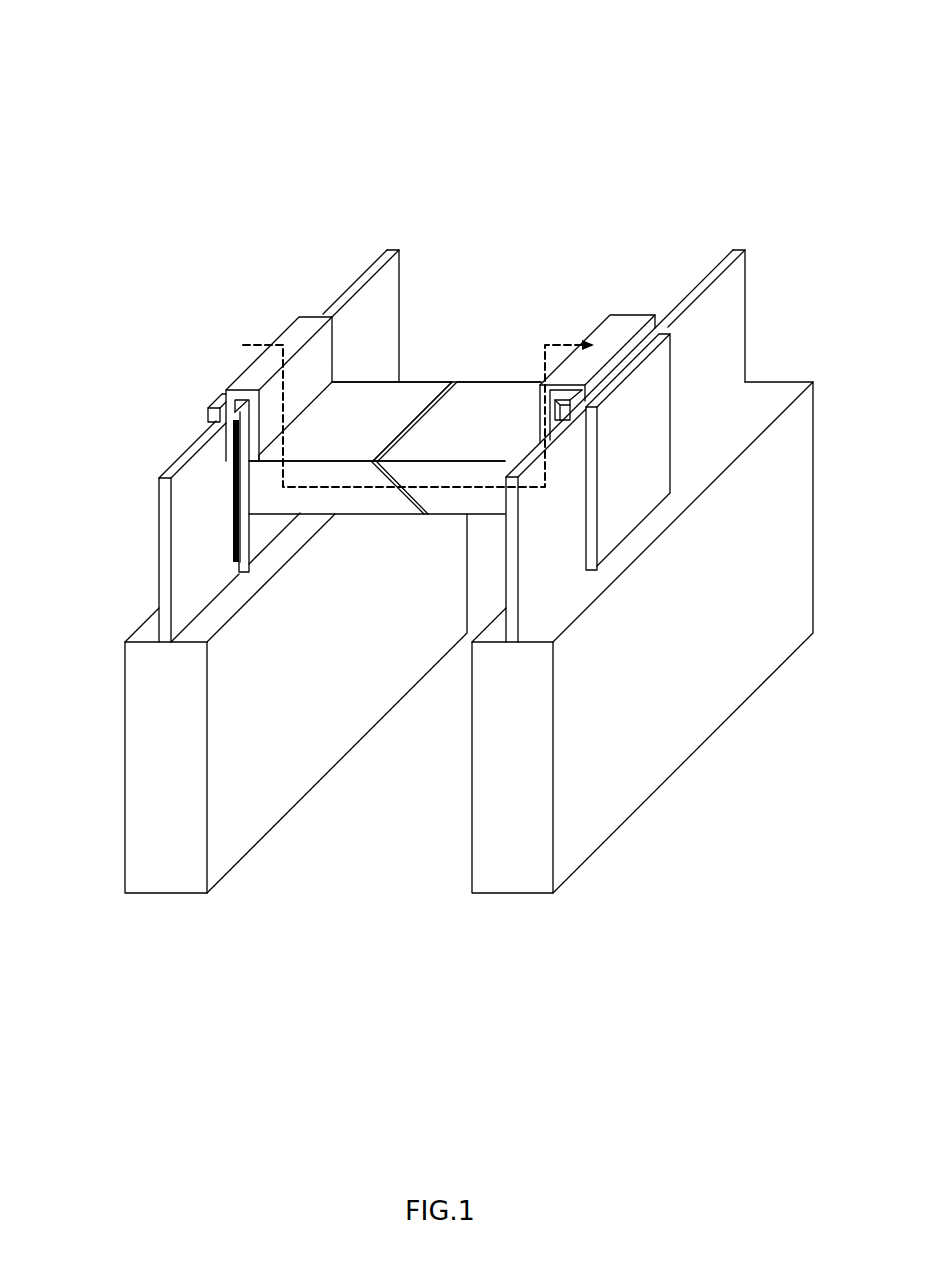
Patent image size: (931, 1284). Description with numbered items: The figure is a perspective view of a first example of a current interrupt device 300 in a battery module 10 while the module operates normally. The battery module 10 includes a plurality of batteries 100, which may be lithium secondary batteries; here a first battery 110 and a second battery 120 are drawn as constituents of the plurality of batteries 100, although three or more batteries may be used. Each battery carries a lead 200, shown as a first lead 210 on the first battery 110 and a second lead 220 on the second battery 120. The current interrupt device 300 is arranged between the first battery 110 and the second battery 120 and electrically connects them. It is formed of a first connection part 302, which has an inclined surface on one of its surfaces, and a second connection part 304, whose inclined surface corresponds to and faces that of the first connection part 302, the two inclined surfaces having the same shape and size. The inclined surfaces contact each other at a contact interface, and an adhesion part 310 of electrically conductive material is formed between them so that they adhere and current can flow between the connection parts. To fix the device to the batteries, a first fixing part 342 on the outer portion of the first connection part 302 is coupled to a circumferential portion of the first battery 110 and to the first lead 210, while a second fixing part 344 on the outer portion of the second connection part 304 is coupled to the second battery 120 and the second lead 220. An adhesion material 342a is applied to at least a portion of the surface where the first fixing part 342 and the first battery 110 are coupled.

The battery module 10 is at (576, 84).
The plurality of batteries 100 is at (165, 962).
The first battery 110 is at (165, 893).
The second battery 120 is at (511, 893).
The lead 200 is at (738, 178).
The first lead 210 is at (389, 249).
The second lead 220 is at (737, 249).
The current interrupt device 300 is at (448, 350).
The first connection part 302 is at (344, 503).
The second connection part 304 is at (443, 495).
The adhesion part 310 is at (419, 502).
The first fixing part 342 is at (233, 543).
The adhesion material 342a is at (233, 470).
The second fixing part 344 is at (563, 413).